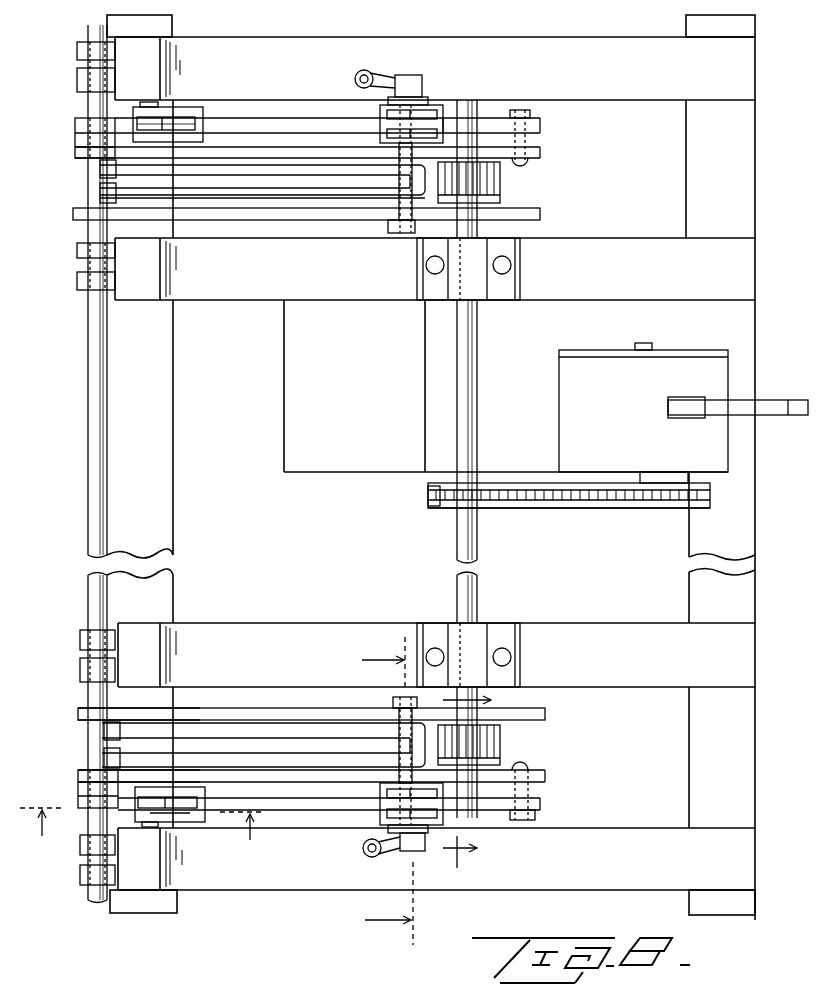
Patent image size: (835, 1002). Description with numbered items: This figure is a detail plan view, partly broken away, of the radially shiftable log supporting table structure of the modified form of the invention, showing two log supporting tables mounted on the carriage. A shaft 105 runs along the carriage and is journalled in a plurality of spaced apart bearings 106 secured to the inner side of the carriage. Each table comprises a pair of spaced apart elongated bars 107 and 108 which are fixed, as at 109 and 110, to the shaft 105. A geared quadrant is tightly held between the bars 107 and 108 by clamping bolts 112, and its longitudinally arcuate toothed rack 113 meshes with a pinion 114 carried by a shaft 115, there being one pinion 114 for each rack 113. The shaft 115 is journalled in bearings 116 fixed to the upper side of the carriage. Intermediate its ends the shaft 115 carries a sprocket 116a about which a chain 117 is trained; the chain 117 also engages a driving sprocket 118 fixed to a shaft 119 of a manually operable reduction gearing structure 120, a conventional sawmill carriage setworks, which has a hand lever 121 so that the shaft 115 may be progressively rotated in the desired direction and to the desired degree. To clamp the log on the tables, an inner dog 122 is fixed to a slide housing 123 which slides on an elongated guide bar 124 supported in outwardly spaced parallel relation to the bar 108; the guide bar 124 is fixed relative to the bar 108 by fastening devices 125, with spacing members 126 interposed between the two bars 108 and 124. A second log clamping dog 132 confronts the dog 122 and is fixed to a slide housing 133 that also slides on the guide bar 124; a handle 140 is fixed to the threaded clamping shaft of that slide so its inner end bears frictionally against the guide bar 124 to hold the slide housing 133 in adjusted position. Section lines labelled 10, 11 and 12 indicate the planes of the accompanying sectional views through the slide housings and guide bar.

The section line 10- 10 is at (142, 839).
The section line 11- 11 is at (373, 791).
The section line 12- 12 is at (455, 781).
The shaft 105 is at (95, 457).
The bearings 106 is at (82, 262).
The elongated bar 107 is at (540, 214).
The elongated bar 108 is at (540, 152).
The fixing point 109 is at (85, 712).
The fixing point 110 is at (85, 776).
The clamping bolts 112 is at (398, 234).
The toothed rack 113 is at (480, 190).
The pinion 114 is at (500, 185).
The shaft 115 is at (466, 534).
The bearings 116 is at (520, 255).
The sprocket 116a is at (445, 482).
The chain 117 is at (508, 490).
The driving sprocket 118 is at (637, 512).
The shaft 119 is at (642, 477).
The reduction gearing structure 120 is at (598, 367).
The hand lever 121 is at (716, 408).
The inner dog 122 is at (183, 128).
The slide housing 123 is at (190, 107).
The guide bar 124 is at (540, 127).
The fastening devices 125 is at (530, 822).
The spacing members 126 is at (84, 138).
The log clamping dog 132 is at (410, 128).
The slide housing 133 is at (440, 108).
The handle 140 is at (386, 76).